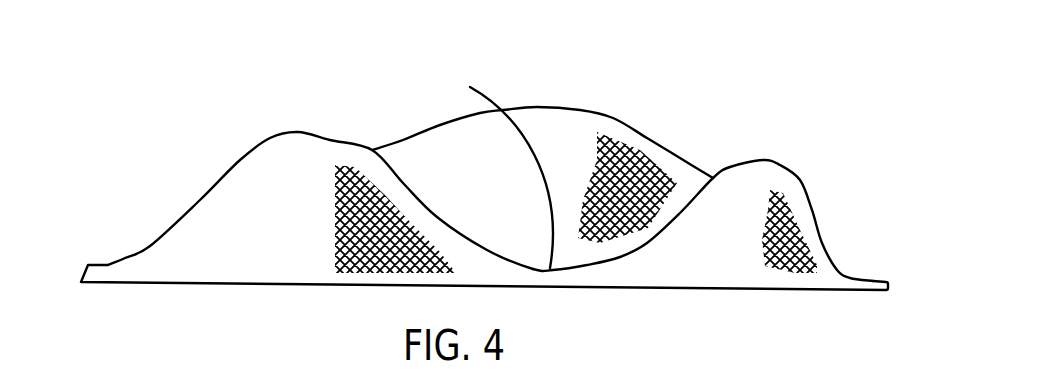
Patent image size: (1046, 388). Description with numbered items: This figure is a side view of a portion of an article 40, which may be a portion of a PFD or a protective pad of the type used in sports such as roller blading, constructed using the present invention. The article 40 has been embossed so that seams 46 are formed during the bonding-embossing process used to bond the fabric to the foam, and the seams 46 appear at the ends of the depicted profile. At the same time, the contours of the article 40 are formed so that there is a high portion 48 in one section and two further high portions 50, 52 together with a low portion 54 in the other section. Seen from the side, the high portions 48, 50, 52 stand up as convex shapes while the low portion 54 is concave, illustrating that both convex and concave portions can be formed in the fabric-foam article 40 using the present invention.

The article 40 is at (320, 98).
The seams 46 is at (102, 266).
The high portion 48 is at (537, 107).
The high portion 50 is at (750, 160).
The high portion 52 is at (285, 133).
The low portion 54 is at (503, 110).